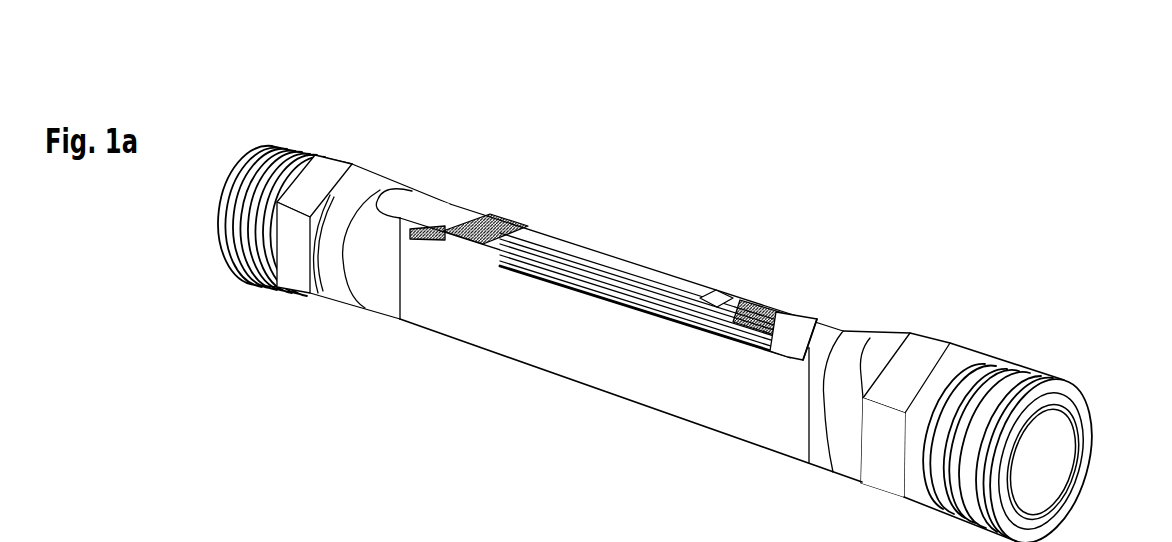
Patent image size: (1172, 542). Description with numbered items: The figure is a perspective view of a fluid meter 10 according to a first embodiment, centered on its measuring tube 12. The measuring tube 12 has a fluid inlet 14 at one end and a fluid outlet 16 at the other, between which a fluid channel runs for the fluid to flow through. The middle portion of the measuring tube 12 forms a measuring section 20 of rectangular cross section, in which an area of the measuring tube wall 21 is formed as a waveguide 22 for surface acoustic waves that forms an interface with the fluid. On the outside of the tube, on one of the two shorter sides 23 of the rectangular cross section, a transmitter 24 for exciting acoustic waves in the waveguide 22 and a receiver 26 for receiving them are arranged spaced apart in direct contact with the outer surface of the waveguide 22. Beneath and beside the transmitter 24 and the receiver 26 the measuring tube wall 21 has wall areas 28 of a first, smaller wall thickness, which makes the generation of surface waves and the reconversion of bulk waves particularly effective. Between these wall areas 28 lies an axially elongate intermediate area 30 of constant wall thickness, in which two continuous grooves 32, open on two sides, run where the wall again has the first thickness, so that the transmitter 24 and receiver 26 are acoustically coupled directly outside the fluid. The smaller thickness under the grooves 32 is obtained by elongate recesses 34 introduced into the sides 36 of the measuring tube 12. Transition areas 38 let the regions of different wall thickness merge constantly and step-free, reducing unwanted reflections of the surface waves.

The fluid meter 10 is at (686, 80).
The measuring tube 12 is at (985, 360).
The fluid inlet 14 is at (233, 160).
The fluid outlet 16 is at (1040, 490).
The measuring section 20 is at (619, 319).
The measuring tube wall 21 is at (463, 207).
The waveguide 22 is at (747, 303).
The shorter side 23 is at (815, 305).
The transmitter 24 is at (495, 210).
The receiver 26 is at (793, 323).
The wall area 28 is at (523, 220).
The intermediate area 30 is at (645, 273).
The groove 32 is at (665, 278).
The elongate recess 34 is at (617, 308).
The side 36 is at (702, 406).
The transition area 38 is at (410, 197).